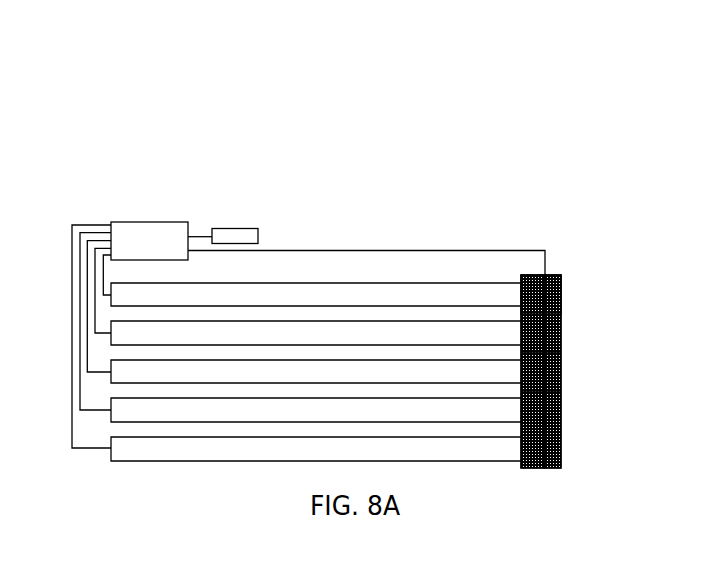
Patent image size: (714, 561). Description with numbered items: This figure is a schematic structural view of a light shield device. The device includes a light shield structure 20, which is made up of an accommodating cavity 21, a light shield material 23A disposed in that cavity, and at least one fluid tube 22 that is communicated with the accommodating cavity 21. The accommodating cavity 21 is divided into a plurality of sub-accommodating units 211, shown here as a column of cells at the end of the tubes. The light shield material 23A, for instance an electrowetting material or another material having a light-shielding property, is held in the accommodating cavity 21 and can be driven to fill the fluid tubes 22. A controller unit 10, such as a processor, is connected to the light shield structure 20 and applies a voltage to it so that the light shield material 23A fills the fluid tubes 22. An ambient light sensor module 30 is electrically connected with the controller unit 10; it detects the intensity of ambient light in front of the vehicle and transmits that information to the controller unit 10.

The controller unit 10 is at (150, 237).
The ambient light sensor module 30 is at (242, 235).
The light shield structure 20 is at (527, 118).
The fluid tube 22 is at (327, 292).
The light shield material 23A is at (532, 275).
The accommodating cavity 21 is at (557, 275).
The sub-accommodating unit 211 is at (567, 277).